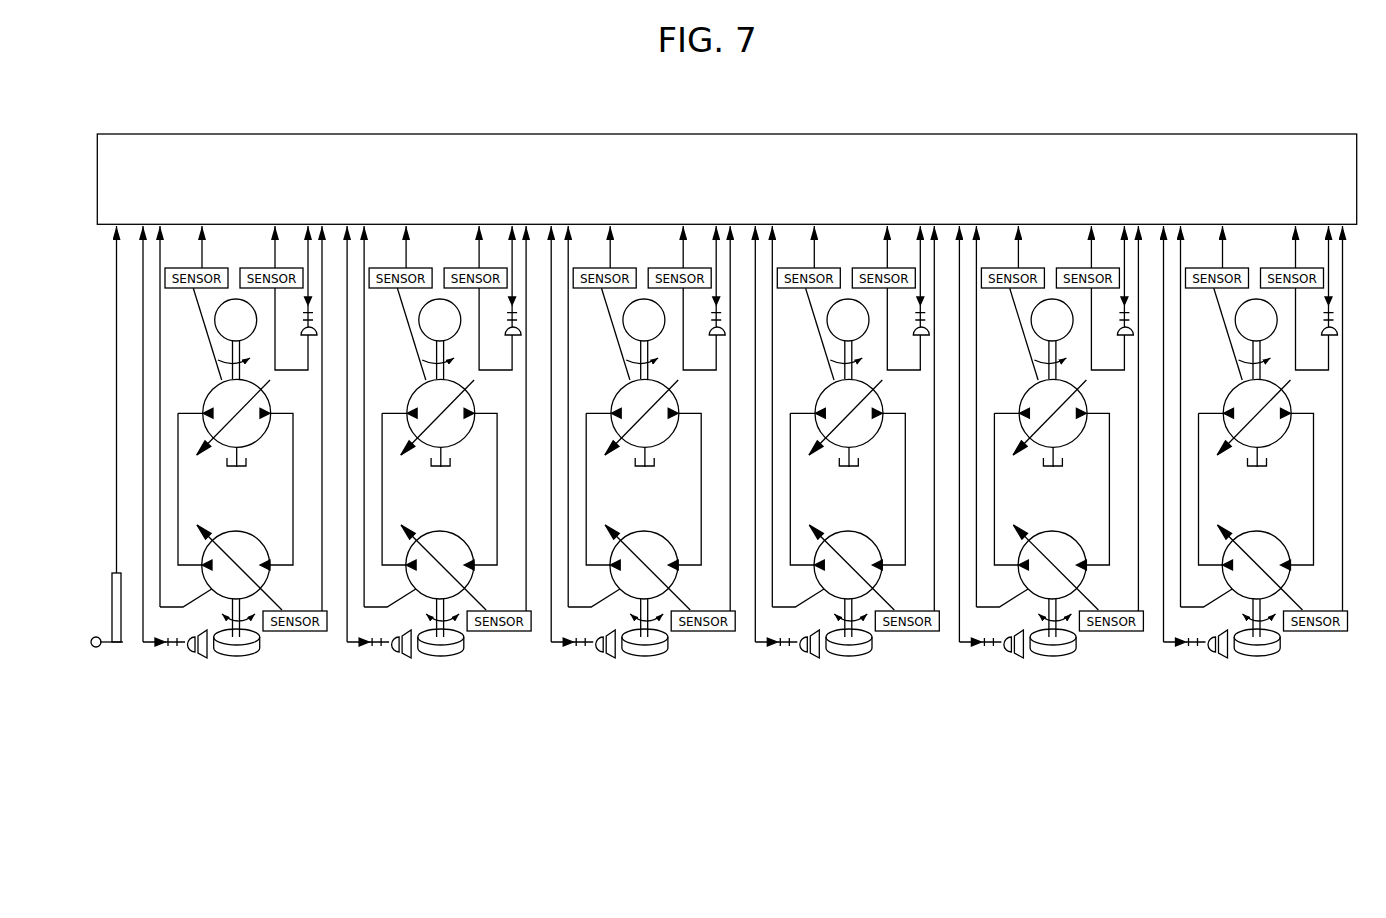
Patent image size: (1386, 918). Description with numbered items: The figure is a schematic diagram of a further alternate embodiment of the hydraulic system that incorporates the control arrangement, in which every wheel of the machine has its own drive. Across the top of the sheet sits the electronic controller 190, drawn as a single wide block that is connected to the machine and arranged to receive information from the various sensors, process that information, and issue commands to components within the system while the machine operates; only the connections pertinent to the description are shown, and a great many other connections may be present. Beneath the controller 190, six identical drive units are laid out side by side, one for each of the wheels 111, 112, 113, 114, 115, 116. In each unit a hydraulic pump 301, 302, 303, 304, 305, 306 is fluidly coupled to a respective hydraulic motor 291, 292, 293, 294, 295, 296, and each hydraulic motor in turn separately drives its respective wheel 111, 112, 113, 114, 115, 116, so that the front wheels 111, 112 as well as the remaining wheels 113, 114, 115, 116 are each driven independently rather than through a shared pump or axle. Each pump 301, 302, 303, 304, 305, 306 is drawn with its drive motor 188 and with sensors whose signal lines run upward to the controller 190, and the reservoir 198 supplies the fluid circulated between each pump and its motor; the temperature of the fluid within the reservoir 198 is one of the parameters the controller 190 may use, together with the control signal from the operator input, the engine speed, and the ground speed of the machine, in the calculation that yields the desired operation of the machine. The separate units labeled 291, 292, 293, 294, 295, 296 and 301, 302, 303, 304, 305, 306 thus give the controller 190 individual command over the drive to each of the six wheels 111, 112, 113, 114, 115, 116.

The electronic controller 190 is at (988, 160).
The electric motor 188 is at (225, 330).
The reservoir 198 is at (233, 470).
The hydraulic pump 301 is at (268, 392).
The hydraulic pump 302 is at (464, 414).
The hydraulic pump 303 is at (668, 414).
The hydraulic pump 304 is at (872, 414).
The hydraulic pump 305 is at (1076, 414).
The hydraulic pump 306 is at (1280, 414).
The hydraulic motor 291 is at (247, 531).
The hydraulic motor 292 is at (443, 548).
The hydraulic motor 293 is at (647, 548).
The hydraulic motor 294 is at (851, 548).
The hydraulic motor 295 is at (1055, 548).
The hydraulic motor 296 is at (1260, 548).
The wheel 111 is at (257, 660).
The wheel 112 is at (475, 640).
The wheel 113 is at (679, 640).
The wheel 114 is at (883, 640).
The wheel 115 is at (1087, 640).
The wheel 116 is at (1291, 640).